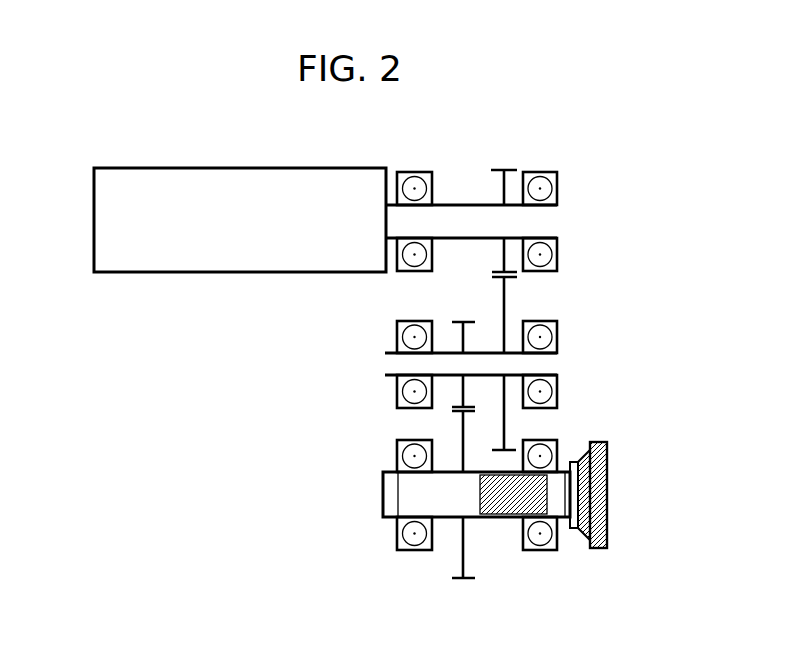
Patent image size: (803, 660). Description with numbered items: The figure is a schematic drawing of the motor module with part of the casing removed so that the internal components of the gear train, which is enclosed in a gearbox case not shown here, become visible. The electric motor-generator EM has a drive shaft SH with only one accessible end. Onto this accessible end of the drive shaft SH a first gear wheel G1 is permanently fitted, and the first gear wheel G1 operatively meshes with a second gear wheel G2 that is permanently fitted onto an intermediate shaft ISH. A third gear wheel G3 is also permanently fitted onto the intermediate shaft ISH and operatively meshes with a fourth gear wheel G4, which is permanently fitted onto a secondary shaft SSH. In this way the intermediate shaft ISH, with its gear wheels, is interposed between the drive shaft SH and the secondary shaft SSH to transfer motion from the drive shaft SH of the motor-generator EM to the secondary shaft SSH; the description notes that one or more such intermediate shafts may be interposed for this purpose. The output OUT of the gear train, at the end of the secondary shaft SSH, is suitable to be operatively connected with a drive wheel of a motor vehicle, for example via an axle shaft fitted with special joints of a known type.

The electric motor-generator EM is at (240, 220).
The drive shaft SH is at (467, 212).
The first gear wheel G1 is at (501, 169).
The intermediate shaft ISH is at (490, 357).
The second gear wheel G2 is at (508, 290).
The third gear wheel G3 is at (460, 320).
The fourth gear wheel G4 is at (461, 428).
The secondary shaft SSH is at (413, 494).
The output of the gear train OUT is at (615, 522).